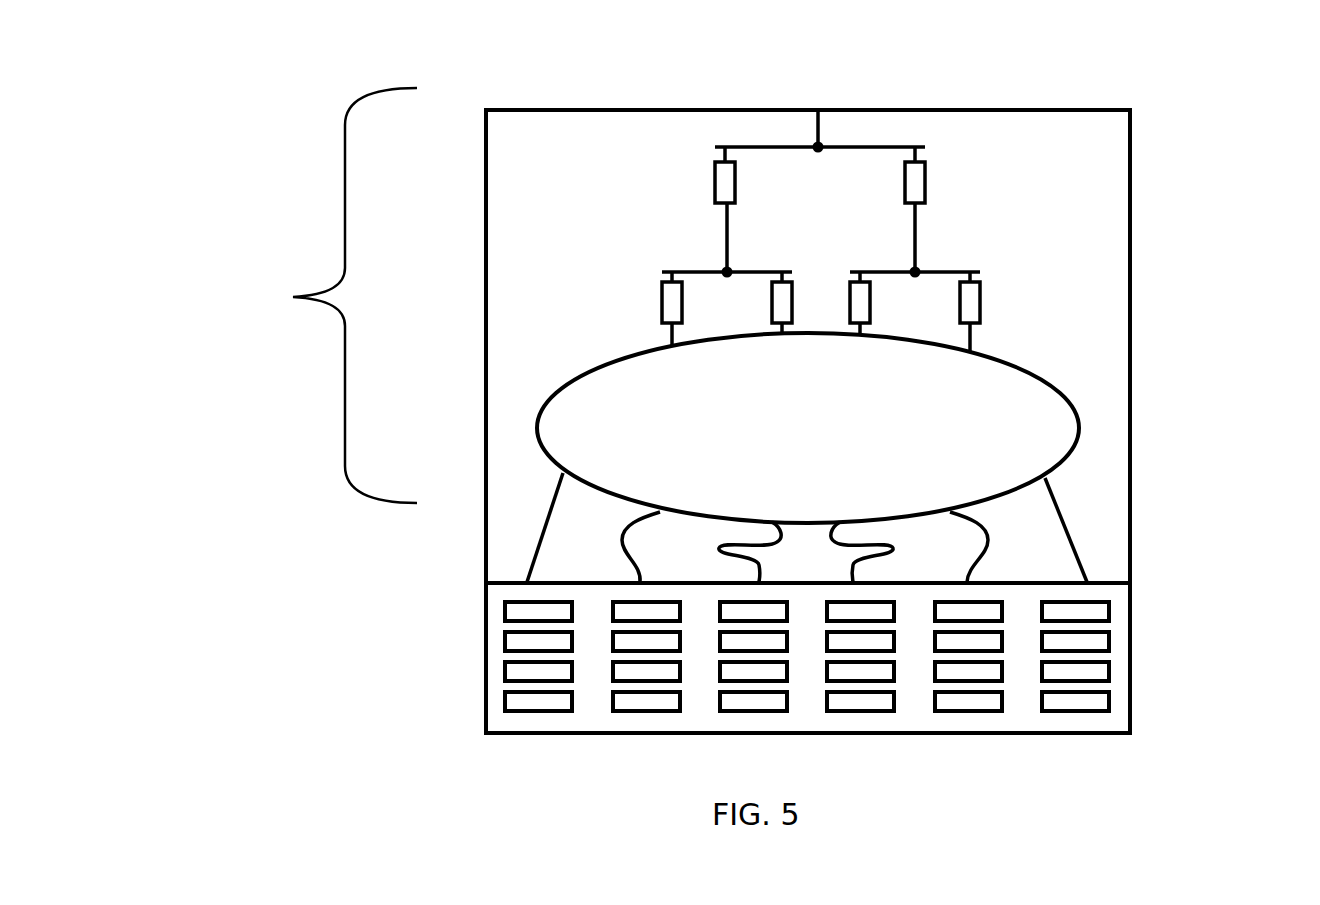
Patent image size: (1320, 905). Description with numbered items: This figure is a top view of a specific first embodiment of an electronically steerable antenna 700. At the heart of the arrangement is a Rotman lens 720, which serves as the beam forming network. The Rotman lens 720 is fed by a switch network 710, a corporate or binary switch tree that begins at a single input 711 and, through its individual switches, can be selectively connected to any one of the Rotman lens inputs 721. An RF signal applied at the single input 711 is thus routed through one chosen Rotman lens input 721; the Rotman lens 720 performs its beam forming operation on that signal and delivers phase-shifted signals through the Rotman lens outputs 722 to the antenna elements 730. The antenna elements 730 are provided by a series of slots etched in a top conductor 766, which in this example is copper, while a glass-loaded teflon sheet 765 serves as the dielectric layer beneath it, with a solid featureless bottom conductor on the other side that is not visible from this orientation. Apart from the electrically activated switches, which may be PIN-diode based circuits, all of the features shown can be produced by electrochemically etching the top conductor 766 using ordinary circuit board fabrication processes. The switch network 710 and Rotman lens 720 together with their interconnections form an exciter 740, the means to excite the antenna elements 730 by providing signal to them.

The solar cell module 700 is at (1150, 350).
The switch network 710 is at (970, 202).
The single input 711 is at (818, 110).
The Rotman lens 720 is at (1080, 417).
The Rotman lens input 721 is at (985, 338).
The Rotman lens output 722 is at (1090, 535).
The antenna element 730 is at (1147, 650).
The exciter 740 is at (293, 297).
The glass-loaded teflon sheet 765 is at (512, 251).
The top conductor 766 is at (1068, 735).